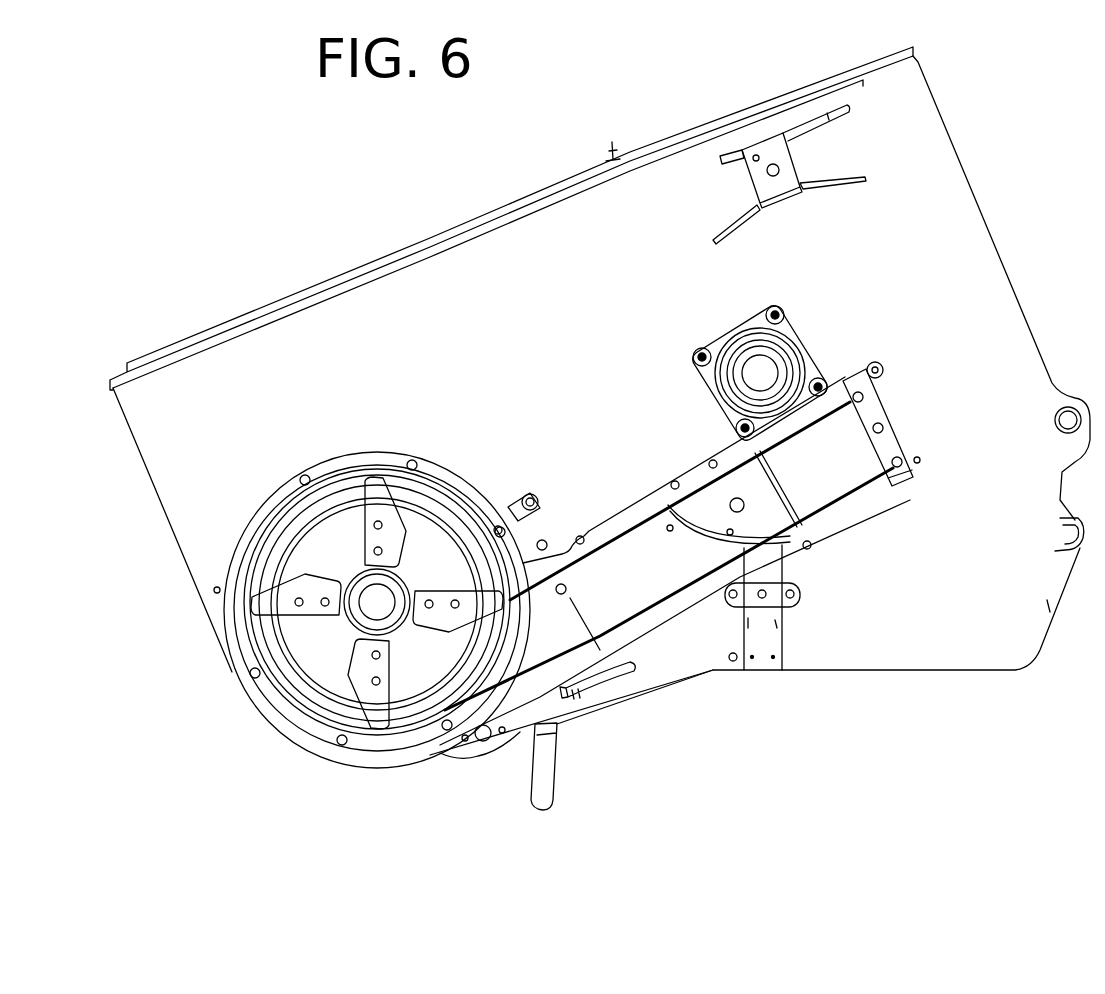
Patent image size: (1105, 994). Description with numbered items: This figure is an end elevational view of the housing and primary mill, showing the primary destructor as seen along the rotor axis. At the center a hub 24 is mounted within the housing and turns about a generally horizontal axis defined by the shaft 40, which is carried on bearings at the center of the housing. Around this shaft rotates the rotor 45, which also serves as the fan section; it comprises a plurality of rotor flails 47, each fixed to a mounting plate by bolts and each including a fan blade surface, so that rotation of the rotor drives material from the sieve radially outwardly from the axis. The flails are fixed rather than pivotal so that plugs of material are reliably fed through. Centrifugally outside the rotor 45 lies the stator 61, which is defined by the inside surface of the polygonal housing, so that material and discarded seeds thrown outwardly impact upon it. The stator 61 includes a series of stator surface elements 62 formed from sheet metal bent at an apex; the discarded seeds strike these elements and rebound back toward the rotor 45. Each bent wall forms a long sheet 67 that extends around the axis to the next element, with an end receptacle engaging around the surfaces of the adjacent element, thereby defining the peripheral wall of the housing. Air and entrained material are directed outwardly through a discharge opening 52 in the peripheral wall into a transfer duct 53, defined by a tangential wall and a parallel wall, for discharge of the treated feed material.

The hub 24 is at (768, 365).
The shaft 40 is at (378, 600).
The rotor 45 is at (346, 578).
The rotor flail 47 is at (377, 507).
The discharge opening 52 is at (530, 667).
The transfer duct 53 is at (680, 590).
The stator 61 is at (268, 480).
The stator surface element 62 is at (333, 470).
The long sheet 67 is at (823, 480).